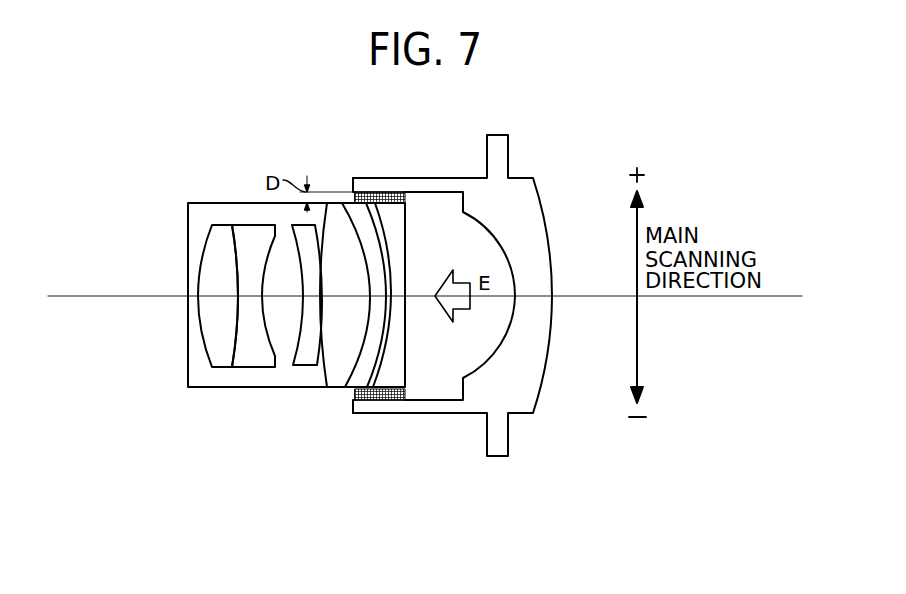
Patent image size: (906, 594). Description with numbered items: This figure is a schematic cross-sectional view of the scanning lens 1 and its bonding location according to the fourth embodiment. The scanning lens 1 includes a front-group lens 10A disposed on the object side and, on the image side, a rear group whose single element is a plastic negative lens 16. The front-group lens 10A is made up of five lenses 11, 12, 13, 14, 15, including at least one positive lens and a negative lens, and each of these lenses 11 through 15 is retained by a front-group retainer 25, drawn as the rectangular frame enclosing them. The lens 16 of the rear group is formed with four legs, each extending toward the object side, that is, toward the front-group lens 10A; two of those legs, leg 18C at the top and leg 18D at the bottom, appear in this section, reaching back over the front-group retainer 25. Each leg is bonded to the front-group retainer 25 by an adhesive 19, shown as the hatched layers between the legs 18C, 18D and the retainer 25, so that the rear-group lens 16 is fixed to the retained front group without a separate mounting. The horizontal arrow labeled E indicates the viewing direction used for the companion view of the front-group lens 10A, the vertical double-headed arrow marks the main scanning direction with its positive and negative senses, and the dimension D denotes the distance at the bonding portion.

The scanning lens 1 is at (602, 107).
The front-group lens 10A is at (385, 483).
The lens 11 is at (220, 362).
The lens 12 is at (255, 362).
The lens 13 is at (305, 368).
The lens 14 is at (337, 378).
The lens 15 is at (355, 378).
The lens 16 is at (538, 205).
The leg 18C is at (437, 178).
The leg 18D is at (435, 413).
The adhesive 19 is at (383, 192).
The front-group retainer 25 is at (189, 238).